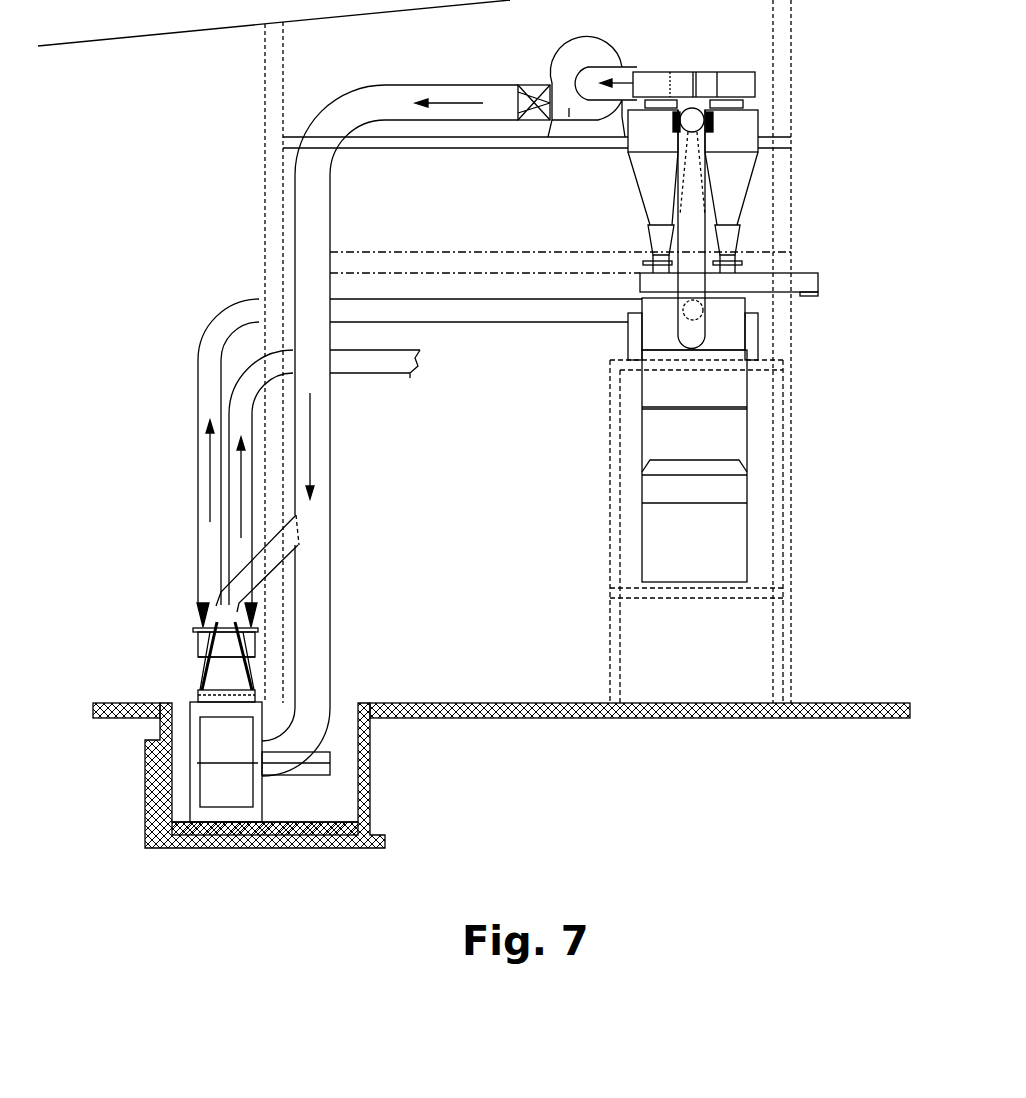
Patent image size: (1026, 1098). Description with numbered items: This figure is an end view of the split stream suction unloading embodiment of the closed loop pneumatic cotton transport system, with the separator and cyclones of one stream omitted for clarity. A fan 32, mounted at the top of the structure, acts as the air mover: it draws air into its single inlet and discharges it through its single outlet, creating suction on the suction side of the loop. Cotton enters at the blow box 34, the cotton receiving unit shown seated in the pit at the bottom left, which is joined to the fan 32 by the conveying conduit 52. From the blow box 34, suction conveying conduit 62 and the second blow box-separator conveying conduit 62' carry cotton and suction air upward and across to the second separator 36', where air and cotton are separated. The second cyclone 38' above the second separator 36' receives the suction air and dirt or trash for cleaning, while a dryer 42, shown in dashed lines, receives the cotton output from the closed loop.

The fan 32 is at (572, 60).
The second cyclone 38' is at (680, 228).
The second separator 36' is at (650, 333).
The dryer 42 is at (670, 540).
The second cotton and suction air blow box-separator conveying conduit 62' is at (420, 452).
The conveying conduit 62 is at (324, 477).
The conveying conduit 52 is at (310, 515).
The blow box 34 is at (187, 740).